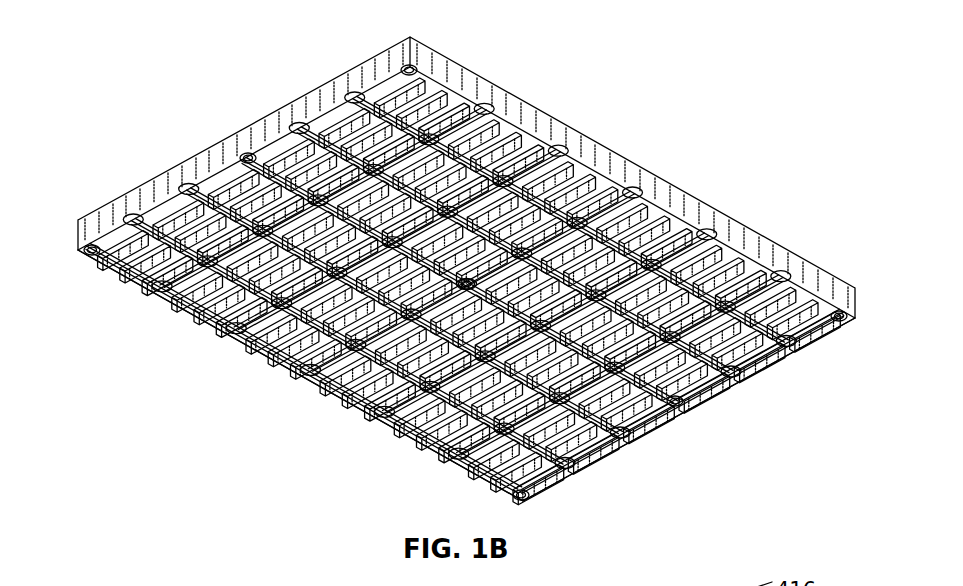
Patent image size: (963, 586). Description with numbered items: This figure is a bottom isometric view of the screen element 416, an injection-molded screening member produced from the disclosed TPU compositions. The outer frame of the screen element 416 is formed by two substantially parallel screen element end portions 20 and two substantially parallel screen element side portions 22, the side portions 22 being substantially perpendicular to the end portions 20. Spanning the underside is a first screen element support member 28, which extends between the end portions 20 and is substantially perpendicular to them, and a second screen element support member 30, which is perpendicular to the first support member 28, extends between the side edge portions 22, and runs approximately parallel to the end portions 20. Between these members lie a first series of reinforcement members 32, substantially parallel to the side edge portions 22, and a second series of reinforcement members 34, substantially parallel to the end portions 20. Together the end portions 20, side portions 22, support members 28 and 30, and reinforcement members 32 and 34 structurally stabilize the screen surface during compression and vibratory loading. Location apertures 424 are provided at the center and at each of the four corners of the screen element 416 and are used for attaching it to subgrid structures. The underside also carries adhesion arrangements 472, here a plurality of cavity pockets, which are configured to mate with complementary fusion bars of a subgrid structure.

The screen element end portions 20 is at (383, 60).
The screen element side portions 22 is at (556, 118).
The first screen element support member 28 is at (669, 406).
The second screen element support member 30 is at (354, 352).
The first series of reinforcement members 32 is at (786, 345).
The second series of reinforcement members 34 is at (443, 413).
The location apertures 424 is at (411, 60).
The adhesion arrangements 472 is at (300, 125).
The screen element 416 is at (750, 96).